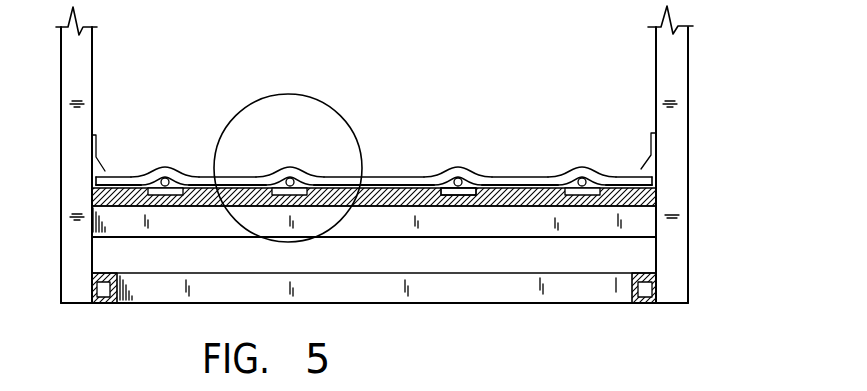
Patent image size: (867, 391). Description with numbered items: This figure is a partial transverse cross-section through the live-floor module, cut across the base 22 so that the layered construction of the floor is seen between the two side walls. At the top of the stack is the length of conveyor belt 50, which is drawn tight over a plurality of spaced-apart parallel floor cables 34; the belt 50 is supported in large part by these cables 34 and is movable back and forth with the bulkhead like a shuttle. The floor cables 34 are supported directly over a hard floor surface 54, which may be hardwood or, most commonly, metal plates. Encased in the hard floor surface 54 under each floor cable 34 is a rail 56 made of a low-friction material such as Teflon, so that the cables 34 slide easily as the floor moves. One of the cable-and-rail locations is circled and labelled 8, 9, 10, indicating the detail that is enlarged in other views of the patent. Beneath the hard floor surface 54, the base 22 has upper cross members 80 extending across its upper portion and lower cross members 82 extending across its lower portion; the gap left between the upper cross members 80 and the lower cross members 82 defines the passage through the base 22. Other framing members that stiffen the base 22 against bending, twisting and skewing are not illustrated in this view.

The keyboard assembly 8 is at (324, 121).
The key switch 9 is at (324, 121).
The key switch detail 10 is at (342, 115).
The base 22 is at (688, 257).
The floor cables 34 is at (457, 177).
The conveyor belt 50 is at (605, 172).
The hard floor surface 54 is at (515, 196).
The rails 56 is at (468, 186).
The upper cross members 80 is at (502, 222).
The lower cross members 82 is at (452, 288).